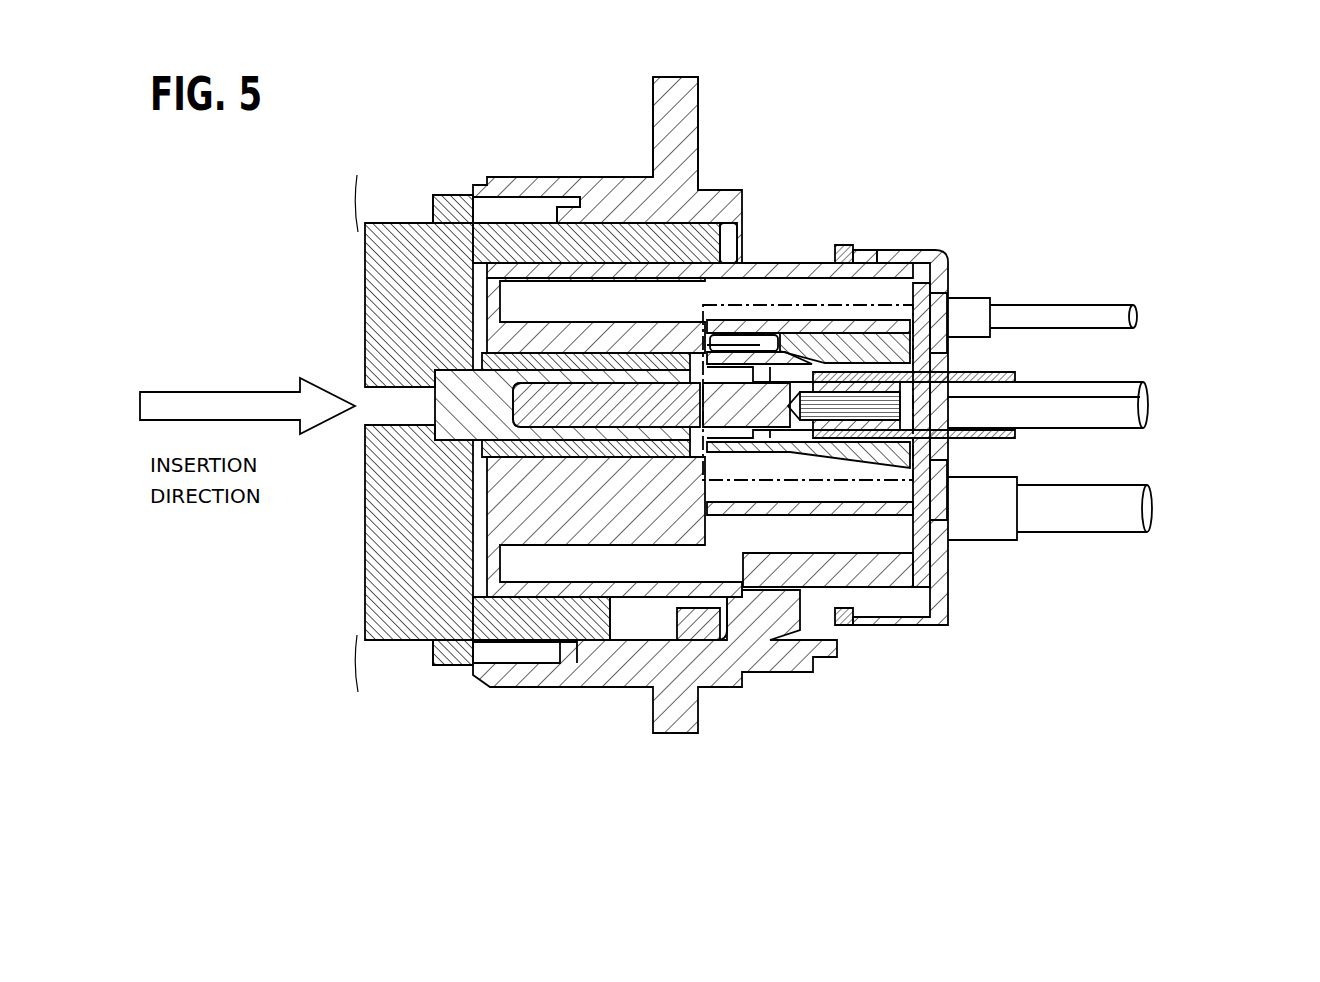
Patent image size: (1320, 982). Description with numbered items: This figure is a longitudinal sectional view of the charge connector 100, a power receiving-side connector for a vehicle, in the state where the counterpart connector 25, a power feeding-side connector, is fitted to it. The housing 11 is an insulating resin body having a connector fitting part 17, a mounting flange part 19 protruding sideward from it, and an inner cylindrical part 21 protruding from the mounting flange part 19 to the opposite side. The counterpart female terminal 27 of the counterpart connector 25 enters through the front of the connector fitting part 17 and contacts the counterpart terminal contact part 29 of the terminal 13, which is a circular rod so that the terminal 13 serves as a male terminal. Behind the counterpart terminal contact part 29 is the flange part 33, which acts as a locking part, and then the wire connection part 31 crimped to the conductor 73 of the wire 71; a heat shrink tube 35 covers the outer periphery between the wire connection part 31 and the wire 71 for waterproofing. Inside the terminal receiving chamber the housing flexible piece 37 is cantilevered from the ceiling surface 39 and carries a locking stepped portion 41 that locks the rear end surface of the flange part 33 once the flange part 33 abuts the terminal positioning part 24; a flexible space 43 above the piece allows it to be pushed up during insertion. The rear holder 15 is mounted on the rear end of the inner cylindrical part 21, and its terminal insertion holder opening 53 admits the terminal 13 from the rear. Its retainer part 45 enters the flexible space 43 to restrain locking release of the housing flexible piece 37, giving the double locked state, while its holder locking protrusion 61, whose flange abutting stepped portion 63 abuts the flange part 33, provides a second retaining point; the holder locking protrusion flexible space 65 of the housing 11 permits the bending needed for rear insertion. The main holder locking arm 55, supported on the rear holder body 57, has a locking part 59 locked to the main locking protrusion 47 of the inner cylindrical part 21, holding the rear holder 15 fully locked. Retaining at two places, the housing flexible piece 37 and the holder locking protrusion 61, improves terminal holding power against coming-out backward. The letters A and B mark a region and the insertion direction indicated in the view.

The charge connector 100 is at (968, 85).
The housing 11 is at (684, 70).
The terminal 13 is at (512, 403).
The rear holder 15 is at (955, 240).
The connector fitting part 17 is at (488, 178).
The mounting flange part 19 is at (660, 84).
The inner cylindrical part 21 is at (770, 372).
The terminal positioning part 24 is at (690, 560).
The counterpart connector 25 is at (355, 238).
The counterpart female terminal 27 is at (567, 440).
The counterpart terminal contact part 29 is at (537, 430).
The wire connection part 31 is at (1100, 397).
The flange part 33 is at (765, 352).
The heat shrink tube 35 is at (1000, 374).
The housing flexible piece 37 is at (432, 210).
The ceiling surface 39 is at (690, 345).
The locking stepped portion 41 is at (505, 366).
The flexible space 43 is at (798, 332).
The retainer part 45 is at (852, 338).
The main locking protrusion 47 is at (905, 250).
The terminal insertion holder opening 53 is at (985, 436).
The main holder locking arm 55 is at (850, 256).
The rear holder body 57 is at (926, 562).
The locking part 59 is at (870, 246).
The holder locking protrusion 61 is at (867, 470).
The flange abutting stepped portion 63 is at (617, 500).
The holder locking protrusion flexible space 65 is at (748, 632).
The wire 71 is at (1100, 310).
The conductor 73 is at (775, 560).
The region A is at (945, 610).
The direction B is at (700, 485).